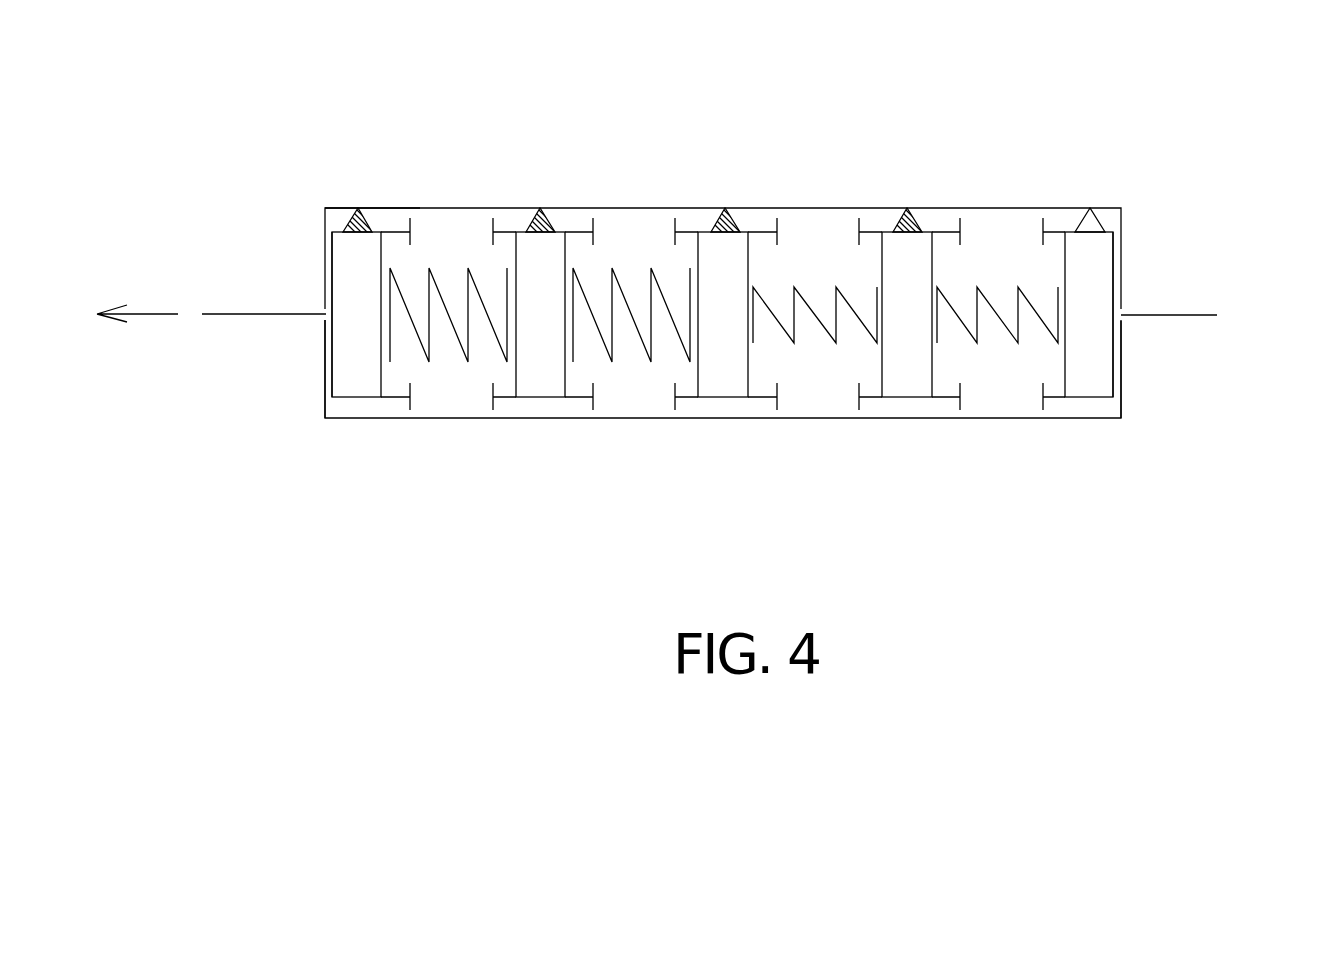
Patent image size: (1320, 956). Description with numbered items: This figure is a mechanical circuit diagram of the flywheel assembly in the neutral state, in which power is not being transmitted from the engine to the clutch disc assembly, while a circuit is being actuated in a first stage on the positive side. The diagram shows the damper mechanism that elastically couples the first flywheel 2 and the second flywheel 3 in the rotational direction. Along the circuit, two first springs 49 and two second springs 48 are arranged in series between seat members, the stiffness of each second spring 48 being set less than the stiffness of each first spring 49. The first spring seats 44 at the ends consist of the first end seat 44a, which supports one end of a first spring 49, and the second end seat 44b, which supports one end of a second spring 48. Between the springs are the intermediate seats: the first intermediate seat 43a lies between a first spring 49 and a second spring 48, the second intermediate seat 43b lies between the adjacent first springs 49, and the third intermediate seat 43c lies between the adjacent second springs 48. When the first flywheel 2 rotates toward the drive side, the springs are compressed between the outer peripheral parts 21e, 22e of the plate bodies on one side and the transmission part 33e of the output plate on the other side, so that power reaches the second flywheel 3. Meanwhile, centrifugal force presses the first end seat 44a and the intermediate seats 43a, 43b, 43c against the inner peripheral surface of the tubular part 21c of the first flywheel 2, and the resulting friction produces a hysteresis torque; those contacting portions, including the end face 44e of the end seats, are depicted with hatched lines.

The first flywheel 2 is at (249, 300).
The second flywheel 3 is at (1163, 298).
The tubular part 21c is at (340, 207).
The outer peripheral parts of the first plate body 21e is at (325, 253).
The outer peripheral parts of the second plate body 22e is at (672, 261).
The transmission part 33e is at (325, 368).
The first spring seats 44 is at (742, 352).
The first end seat 44a is at (360, 375).
The second end seat 44b is at (1092, 380).
The bearing end face 44e is at (343, 335).
The first intermediate seat 43a is at (720, 373).
The second intermediate seat 43b is at (540, 368).
The third intermediate seat 43c is at (905, 373).
The second spring 48 is at (813, 248).
The first spring 49 is at (452, 278).